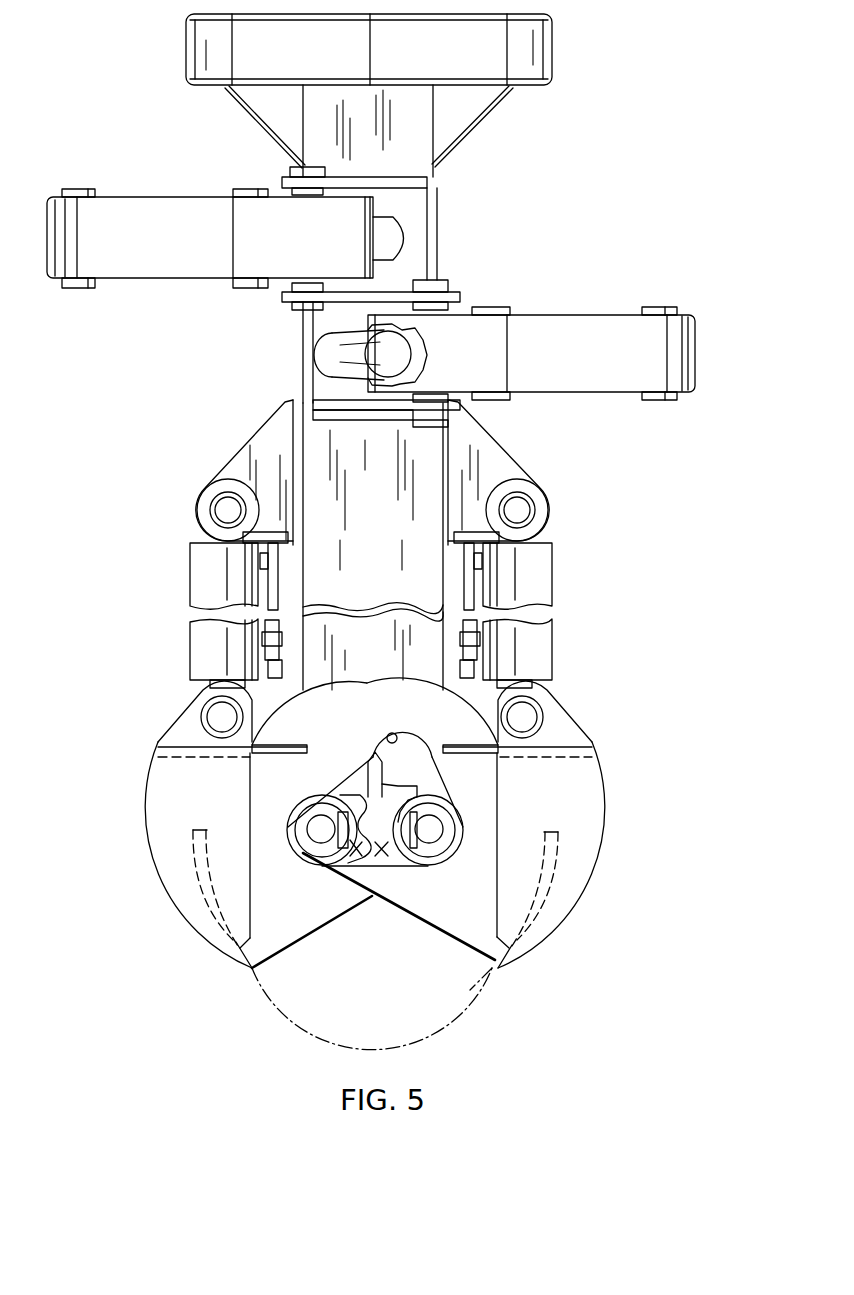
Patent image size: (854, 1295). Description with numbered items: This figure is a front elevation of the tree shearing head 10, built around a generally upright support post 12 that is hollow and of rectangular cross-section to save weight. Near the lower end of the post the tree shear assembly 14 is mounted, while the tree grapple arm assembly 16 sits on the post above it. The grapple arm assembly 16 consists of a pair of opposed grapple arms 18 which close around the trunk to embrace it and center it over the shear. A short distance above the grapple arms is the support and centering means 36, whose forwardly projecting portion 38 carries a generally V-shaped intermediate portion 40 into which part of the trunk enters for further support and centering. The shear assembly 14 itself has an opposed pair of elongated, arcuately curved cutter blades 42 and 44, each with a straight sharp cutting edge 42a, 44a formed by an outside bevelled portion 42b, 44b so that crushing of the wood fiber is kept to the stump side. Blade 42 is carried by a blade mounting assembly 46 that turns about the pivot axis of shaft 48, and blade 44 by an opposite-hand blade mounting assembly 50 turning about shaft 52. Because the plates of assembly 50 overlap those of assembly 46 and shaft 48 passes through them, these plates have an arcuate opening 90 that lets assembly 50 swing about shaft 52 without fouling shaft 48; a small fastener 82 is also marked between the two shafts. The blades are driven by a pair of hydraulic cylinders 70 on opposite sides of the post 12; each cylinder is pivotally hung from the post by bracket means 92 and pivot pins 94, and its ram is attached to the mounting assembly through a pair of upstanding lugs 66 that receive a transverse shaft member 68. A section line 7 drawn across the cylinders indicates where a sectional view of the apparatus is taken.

The tree shearing head 10 is at (558, 452).
The support post 12 is at (437, 193).
The tree shear assembly 14 is at (615, 785).
The tree grapple arm assembly 16 is at (627, 247).
The grapple arm 18 is at (137, 195).
The support and centering means 36 is at (497, 91).
The forwardly projecting portion 38 is at (545, 47).
The V-shaped intermediate portion 40 is at (273, 72).
The cutter blade 42 is at (223, 912).
The cutting edge 42a is at (252, 968).
The bevelled portion 42b is at (240, 953).
The cutter blade 44 is at (498, 905).
The cutting edge 44a is at (498, 965).
The bevelled portion 44b is at (517, 957).
The blade mounting assembly 46 is at (152, 851).
The shaft 48 is at (428, 833).
The blade mounting assembly 50 is at (590, 838).
The shaft 52 is at (318, 827).
The upstanding lugs 66 is at (573, 737).
The transverse shaft member 68 is at (538, 710).
The hydraulic cylinder 70 is at (200, 580).
The section line 7- 7 is at (175, 685).
The bolt 82 is at (386, 848).
The arcuate opening 90 is at (393, 737).
The bracket means 92 is at (525, 487).
The pivot pins 94 is at (520, 513).